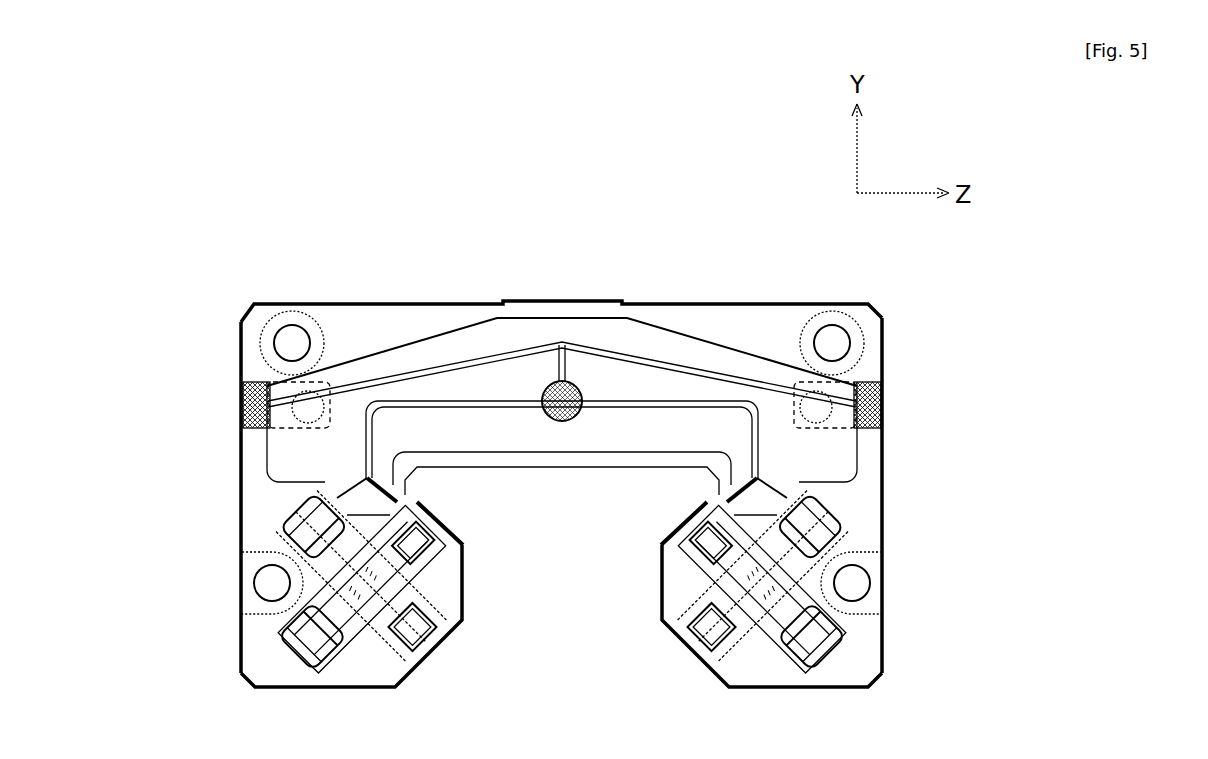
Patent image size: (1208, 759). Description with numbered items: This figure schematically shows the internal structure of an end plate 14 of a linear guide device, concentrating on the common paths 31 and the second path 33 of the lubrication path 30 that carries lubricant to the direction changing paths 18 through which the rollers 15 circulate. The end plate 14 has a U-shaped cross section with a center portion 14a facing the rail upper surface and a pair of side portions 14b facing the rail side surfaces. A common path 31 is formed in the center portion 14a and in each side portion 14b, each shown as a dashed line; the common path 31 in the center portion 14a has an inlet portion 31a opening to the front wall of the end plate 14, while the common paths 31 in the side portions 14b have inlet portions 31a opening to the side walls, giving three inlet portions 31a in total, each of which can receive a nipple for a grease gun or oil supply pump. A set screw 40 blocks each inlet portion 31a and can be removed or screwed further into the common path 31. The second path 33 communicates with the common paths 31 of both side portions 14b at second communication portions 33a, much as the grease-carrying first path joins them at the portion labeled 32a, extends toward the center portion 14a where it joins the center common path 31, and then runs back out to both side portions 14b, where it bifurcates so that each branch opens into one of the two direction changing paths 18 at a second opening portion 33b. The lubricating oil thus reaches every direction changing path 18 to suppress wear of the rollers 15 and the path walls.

The end plate 14 is at (1010, 257).
The center portion 14a is at (690, 322).
The side portion 14b is at (870, 527).
The roller 15 is at (303, 640).
The direction changing path 18 is at (440, 587).
The lubrication path 30 is at (487, 355).
The common path 31 is at (283, 422).
The inlet portion 31a is at (580, 417).
The arm portion 32a is at (776, 368).
The second path 33 is at (455, 407).
The second communication portion 33a is at (860, 388).
The second opening portion 33b is at (769, 492).
The set screw 40 is at (556, 385).